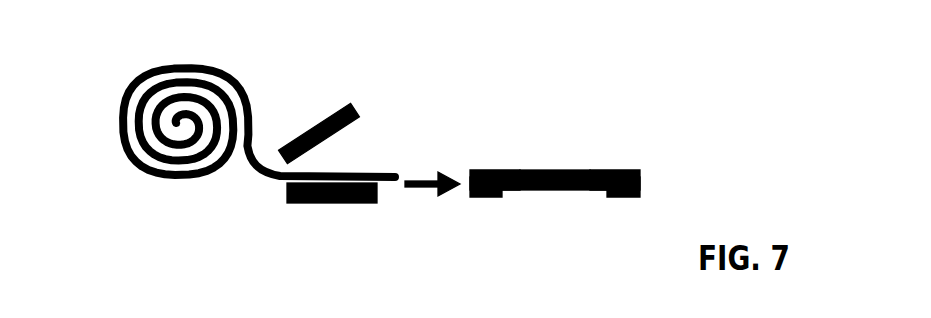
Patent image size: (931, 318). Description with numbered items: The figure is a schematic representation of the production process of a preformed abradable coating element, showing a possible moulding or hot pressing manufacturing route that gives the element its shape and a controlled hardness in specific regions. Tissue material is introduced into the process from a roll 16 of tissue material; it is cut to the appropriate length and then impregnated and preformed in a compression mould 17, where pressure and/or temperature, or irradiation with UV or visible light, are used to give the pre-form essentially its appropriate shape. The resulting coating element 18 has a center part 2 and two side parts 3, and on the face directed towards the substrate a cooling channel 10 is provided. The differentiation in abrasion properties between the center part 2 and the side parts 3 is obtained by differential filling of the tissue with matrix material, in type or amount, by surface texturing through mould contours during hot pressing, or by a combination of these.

The roll of tissue material 16 is at (174, 68).
The compression mould 17 is at (327, 120).
The side parts 3 is at (488, 170).
The center part 2 is at (545, 170).
The coating element 18 is at (617, 170).
The cooling channel 10 is at (603, 198).